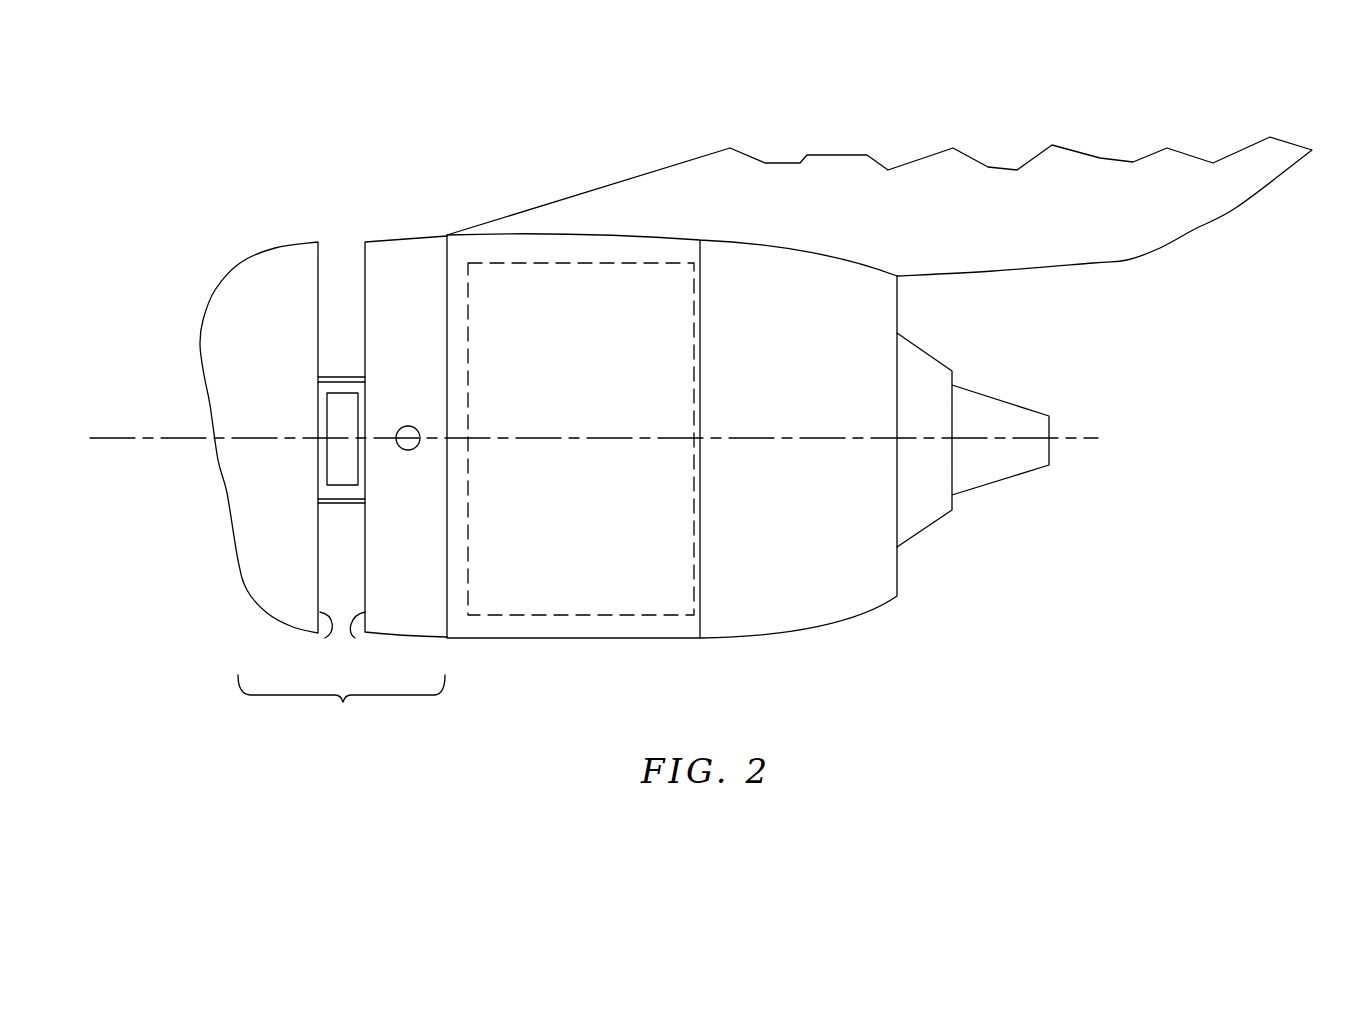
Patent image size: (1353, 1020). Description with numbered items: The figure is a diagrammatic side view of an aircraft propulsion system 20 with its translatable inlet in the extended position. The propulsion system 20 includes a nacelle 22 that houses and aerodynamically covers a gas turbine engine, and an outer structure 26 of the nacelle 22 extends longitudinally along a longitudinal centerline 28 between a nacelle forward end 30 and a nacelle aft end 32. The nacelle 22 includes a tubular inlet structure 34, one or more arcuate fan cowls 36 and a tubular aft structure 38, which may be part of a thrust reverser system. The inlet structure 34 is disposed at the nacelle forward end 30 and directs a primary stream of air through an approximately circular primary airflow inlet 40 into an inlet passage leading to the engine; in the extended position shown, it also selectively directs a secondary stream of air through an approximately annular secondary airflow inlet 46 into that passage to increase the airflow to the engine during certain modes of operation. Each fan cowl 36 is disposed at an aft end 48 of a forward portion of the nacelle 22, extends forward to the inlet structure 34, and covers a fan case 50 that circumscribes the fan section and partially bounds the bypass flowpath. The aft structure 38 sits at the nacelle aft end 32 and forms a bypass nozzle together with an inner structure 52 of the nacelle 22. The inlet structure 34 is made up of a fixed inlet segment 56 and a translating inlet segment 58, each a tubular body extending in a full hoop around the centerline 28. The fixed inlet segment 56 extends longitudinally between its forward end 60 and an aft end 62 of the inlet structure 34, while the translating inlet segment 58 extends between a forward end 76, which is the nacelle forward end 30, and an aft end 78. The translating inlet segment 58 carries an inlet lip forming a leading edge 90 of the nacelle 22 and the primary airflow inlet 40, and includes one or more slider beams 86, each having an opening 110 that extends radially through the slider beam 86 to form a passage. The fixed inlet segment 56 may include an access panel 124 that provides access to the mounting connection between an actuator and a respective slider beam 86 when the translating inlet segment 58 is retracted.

The aircraft propulsion system 20 is at (183, 150).
The nacelle 22 is at (387, 210).
The outer structure 26 is at (530, 233).
The longitudinal centerline 28 is at (98, 443).
The nacelle forward end 30 is at (200, 362).
The nacelle aft end 32 is at (897, 300).
The inlet structure 34 is at (341, 706).
The fan cowl 36 is at (563, 650).
The nacelle aft structure 38 is at (802, 641).
The primary airflow inlet 40 is at (198, 405).
The secondary airflow inlet 46 is at (342, 248).
The aft end of forward portion of the nacelle 48 is at (702, 255).
The fan case 50 is at (643, 615).
The inner structure 52 is at (932, 526).
The fixed inlet segment 56 is at (408, 233).
The translating inlet segment 58 is at (228, 270).
The forward end of fixed inlet segment 60 is at (355, 638).
The aft end of inlet structure 62 is at (448, 632).
The forward end of translating inlet segment 76 is at (237, 563).
The aft end of translating inlet segment 78 is at (325, 638).
The slider beam 86 is at (343, 367).
The leading edge 90 is at (223, 493).
The opening 110 is at (347, 418).
The access panel 124 is at (408, 450).